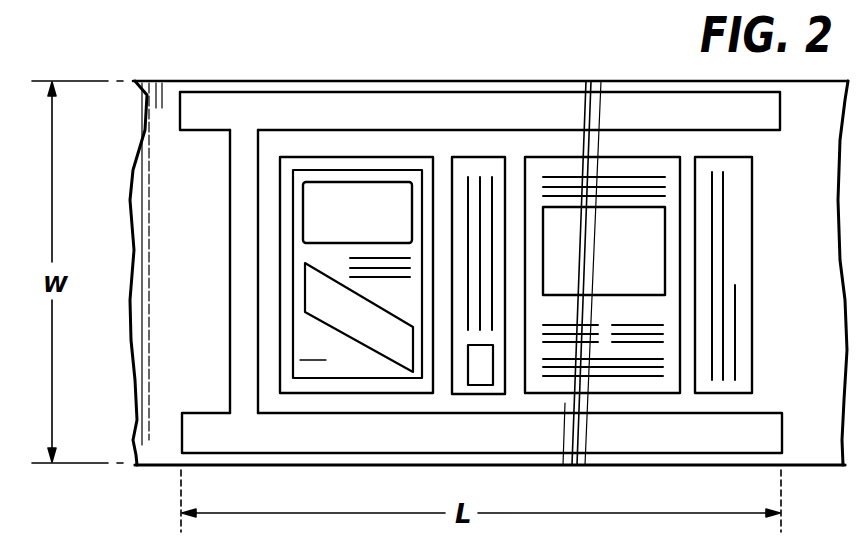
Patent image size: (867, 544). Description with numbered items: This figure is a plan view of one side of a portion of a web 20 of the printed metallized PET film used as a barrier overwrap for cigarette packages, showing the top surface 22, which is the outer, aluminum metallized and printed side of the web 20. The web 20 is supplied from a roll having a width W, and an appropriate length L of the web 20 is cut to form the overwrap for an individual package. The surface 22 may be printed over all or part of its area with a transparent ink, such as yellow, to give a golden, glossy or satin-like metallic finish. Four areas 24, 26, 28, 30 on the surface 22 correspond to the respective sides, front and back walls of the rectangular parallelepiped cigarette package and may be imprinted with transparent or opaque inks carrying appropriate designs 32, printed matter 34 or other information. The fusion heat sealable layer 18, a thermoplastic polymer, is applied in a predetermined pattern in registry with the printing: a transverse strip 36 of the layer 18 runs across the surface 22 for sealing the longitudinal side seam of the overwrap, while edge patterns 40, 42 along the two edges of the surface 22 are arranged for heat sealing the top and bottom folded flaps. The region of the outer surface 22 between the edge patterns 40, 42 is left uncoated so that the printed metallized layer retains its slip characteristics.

The fusion heat sealable layer 18 is at (295, 82).
The web 20 is at (228, 63).
The top surface 22 is at (822, 299).
The area 24 is at (383, 395).
The area 26 is at (499, 394).
The area 28 is at (627, 393).
The area 30 is at (727, 393).
The design 32 is at (386, 208).
The printed matter 34 is at (313, 375).
The transverse strip 36 is at (245, 219).
The edge pattern 40 is at (343, 110).
The edge pattern 42 is at (420, 438).